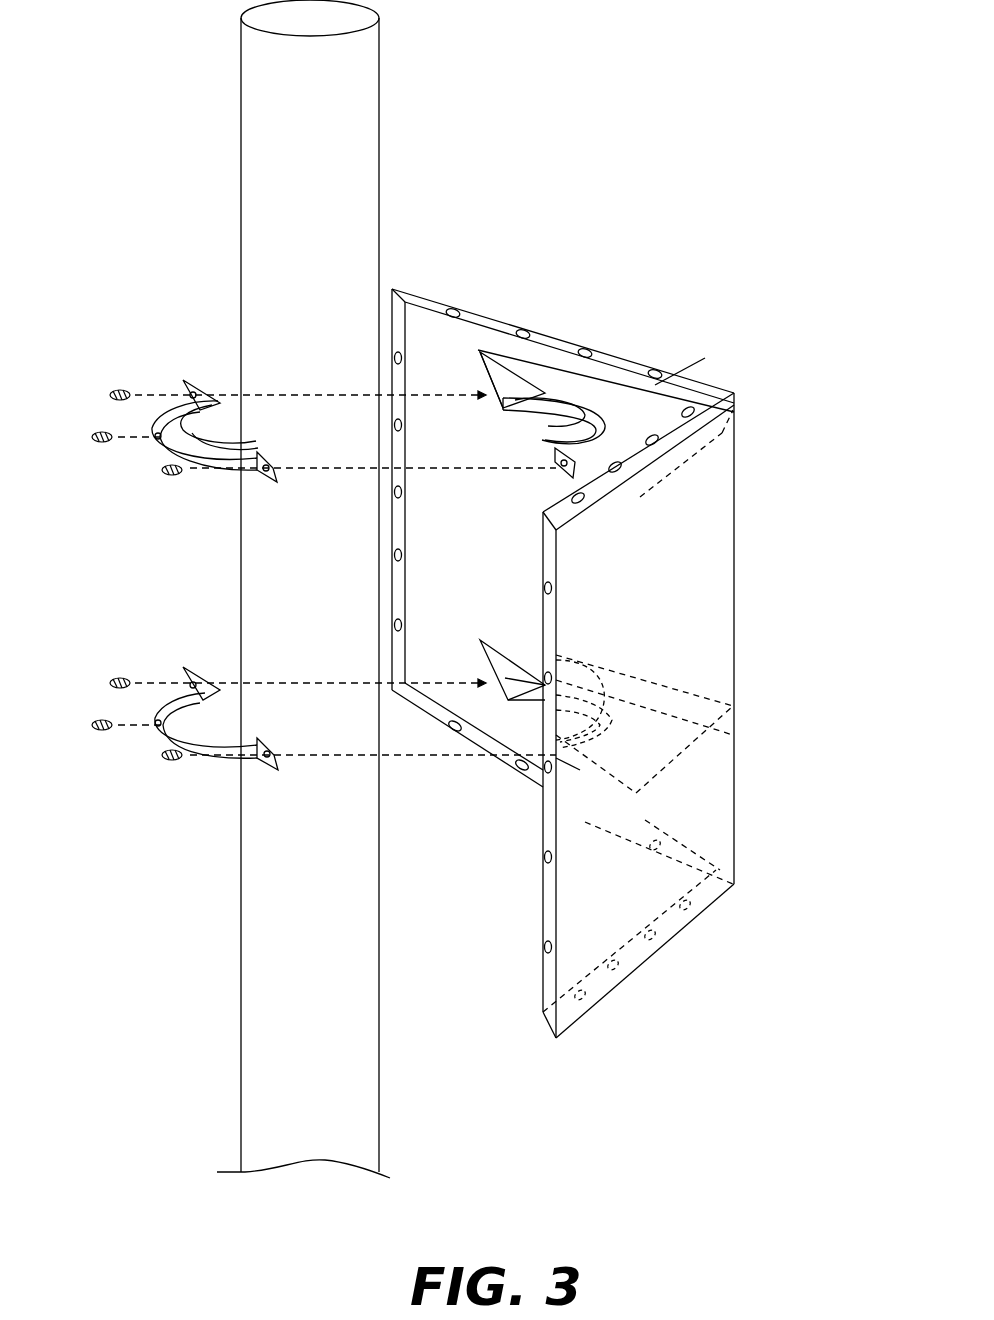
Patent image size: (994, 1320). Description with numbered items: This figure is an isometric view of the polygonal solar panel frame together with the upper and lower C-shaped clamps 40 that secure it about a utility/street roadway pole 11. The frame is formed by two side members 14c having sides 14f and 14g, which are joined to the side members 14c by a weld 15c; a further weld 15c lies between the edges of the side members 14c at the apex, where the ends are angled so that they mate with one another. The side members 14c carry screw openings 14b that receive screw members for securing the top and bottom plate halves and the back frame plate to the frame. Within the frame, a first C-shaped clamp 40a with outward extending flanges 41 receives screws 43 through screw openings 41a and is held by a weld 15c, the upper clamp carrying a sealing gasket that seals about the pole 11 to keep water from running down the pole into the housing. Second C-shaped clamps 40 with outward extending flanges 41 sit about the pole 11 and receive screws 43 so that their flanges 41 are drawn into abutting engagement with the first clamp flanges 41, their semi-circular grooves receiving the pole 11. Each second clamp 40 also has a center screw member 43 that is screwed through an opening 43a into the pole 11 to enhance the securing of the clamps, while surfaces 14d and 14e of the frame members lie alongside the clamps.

The utility/street roadway pole 11 is at (328, 224).
The screw openings 14b is at (403, 355).
The side members 14c is at (462, 444).
The flange 14d is at (705, 443).
The flange 14e is at (577, 405).
The side 14f is at (662, 488).
The side 14g is at (672, 680).
The weld 15c is at (672, 365).
The C-shaped clamps 40 is at (158, 455).
The clamp band 40a is at (215, 418).
The outward extending flanges 41 is at (190, 383).
The screw openings 41a is at (482, 390).
The screws 43 is at (122, 388).
The screw hole 43a is at (155, 436).